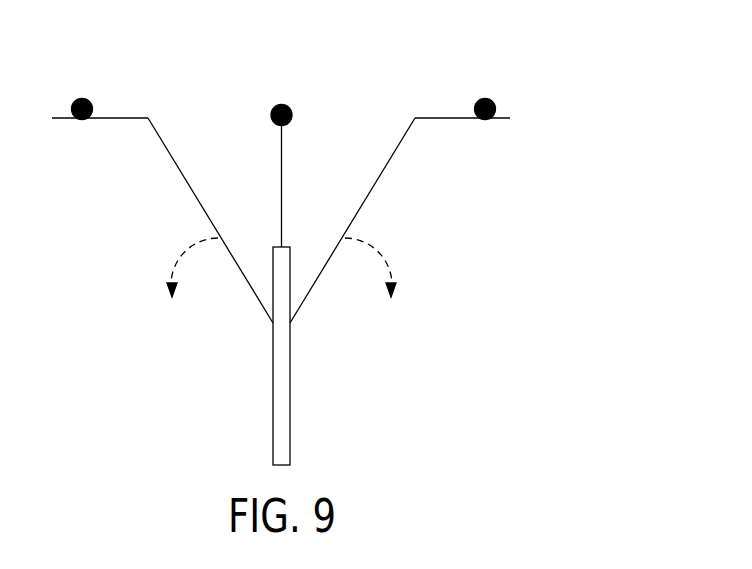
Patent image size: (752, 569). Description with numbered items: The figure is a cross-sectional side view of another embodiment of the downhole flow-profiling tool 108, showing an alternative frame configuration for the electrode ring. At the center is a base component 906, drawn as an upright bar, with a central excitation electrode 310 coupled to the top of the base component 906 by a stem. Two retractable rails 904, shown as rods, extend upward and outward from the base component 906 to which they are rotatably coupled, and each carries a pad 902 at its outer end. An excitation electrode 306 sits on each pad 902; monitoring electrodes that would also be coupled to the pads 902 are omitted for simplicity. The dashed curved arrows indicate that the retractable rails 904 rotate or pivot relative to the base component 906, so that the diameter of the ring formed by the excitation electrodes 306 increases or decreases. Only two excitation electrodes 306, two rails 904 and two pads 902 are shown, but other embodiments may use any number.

The downhole flow-profiling tool 108 is at (549, 49).
The excitation electrodes 306 is at (79, 98).
The central excitation electrode 310 is at (281, 102).
The pad 902 is at (118, 120).
The retractable rail 904 is at (202, 211).
The base component 906 is at (272, 410).